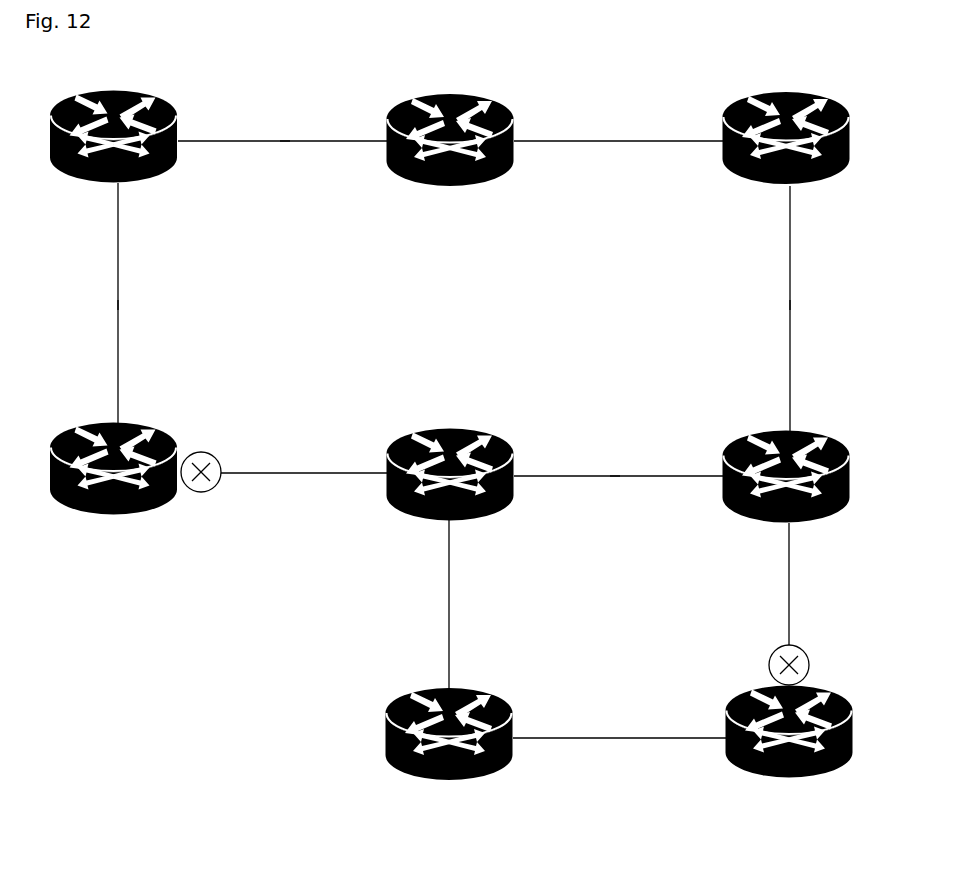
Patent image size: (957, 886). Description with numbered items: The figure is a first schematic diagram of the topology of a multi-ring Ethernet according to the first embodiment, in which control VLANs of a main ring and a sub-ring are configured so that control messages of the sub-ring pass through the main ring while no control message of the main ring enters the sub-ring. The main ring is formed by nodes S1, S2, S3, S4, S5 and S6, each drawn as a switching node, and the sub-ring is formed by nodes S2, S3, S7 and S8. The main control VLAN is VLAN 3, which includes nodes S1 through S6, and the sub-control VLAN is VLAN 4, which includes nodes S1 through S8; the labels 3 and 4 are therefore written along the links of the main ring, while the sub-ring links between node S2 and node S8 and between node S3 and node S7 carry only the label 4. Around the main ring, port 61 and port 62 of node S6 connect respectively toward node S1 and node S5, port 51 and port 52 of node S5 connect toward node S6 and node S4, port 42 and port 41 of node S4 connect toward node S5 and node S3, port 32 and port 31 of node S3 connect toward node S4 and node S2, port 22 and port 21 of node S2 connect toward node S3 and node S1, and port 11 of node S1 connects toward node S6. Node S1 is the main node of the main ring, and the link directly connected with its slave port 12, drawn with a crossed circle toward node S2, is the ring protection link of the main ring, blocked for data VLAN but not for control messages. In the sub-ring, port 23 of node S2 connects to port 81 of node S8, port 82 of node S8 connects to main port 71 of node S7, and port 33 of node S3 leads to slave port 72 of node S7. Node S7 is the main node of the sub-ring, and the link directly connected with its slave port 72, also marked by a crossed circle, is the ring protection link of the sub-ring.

The main node of the main ring S1 is at (113, 531).
The node S2 is at (450, 516).
The node S3 is at (786, 517).
The node S4 is at (786, 123).
The node S5 is at (450, 124).
The node S6 is at (113, 121).
The main node of the sub-ring S7 is at (754, 754).
The node S8 is at (449, 750).
The port of node S1 11 is at (96, 386).
The slave port of main node S1 12 is at (204, 492).
The port of node S2 21 is at (353, 502).
The port of node S2 22 is at (547, 459).
The port of node S2 23 is at (470, 555).
The port of node S3 31 is at (691, 459).
The port of node S3 32 is at (813, 396).
The port of node S3 33 is at (812, 556).
The port of node S4 41 is at (813, 223).
The port of node S4 42 is at (691, 125).
The port of node S5 51 is at (353, 125).
The port of node S5 52 is at (547, 125).
The port of node S6 61 is at (96, 221).
The port of node S6 62 is at (214, 125).
The main port of main node S7 71 is at (693, 757).
The slave port of main node S7 72 is at (804, 665).
The port of node S8 81 is at (429, 654).
The port of node S8 82 is at (546, 757).
The main control VLAN 3 is at (474, 308).
The sub-control VLAN 4 is at (454, 441).